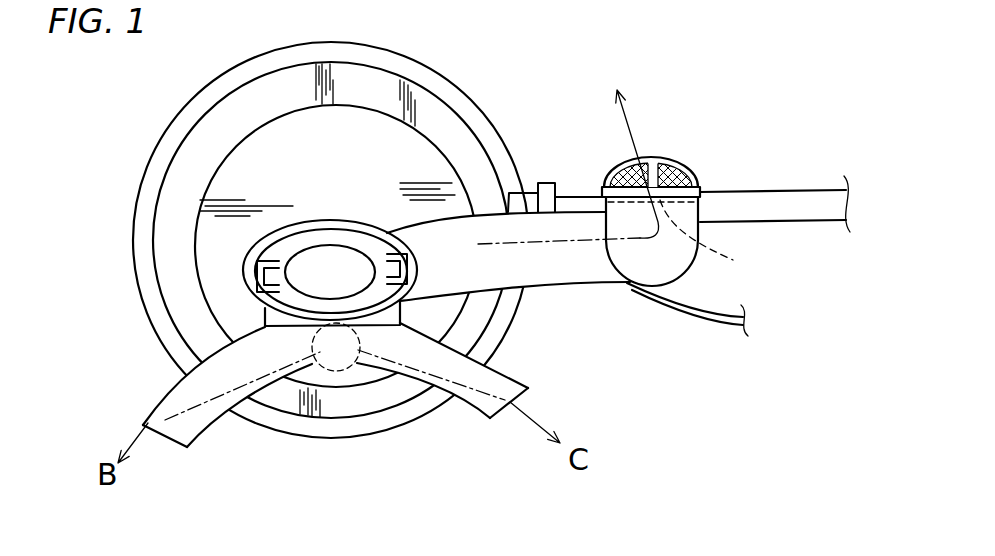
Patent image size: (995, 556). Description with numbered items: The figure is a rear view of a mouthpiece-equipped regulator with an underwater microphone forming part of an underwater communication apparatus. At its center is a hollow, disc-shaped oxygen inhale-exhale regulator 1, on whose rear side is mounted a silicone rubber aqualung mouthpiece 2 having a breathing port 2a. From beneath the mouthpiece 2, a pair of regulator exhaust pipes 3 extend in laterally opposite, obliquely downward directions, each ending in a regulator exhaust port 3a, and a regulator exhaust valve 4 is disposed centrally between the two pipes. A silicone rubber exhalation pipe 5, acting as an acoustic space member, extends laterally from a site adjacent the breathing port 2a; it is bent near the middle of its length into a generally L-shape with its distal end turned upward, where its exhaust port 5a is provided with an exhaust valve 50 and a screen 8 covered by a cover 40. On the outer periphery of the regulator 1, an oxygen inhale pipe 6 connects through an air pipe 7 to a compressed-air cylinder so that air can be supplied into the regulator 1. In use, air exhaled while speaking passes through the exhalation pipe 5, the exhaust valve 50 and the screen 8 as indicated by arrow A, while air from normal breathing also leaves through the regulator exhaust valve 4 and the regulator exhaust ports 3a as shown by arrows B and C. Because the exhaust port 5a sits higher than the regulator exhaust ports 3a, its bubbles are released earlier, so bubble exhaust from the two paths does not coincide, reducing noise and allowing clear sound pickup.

The oxygen inhale-exhale regulator 1 is at (175, 130).
The aqualung mouthpiece 2 is at (255, 262).
The breathing port 2a is at (323, 258).
The regulator exhaust pipe 3 is at (170, 398).
The regulator exhaust port 3a is at (172, 442).
The regulator exhaust valve 4 is at (335, 360).
The exhalation pipe 5 is at (575, 268).
The exhaust port 5a is at (680, 165).
The oxygen inhale pipe 6 is at (528, 200).
The air pipe 7 is at (795, 210).
The screen 8 is at (623, 168).
The cover 40 is at (655, 163).
The exhaust valve 50 is at (705, 247).